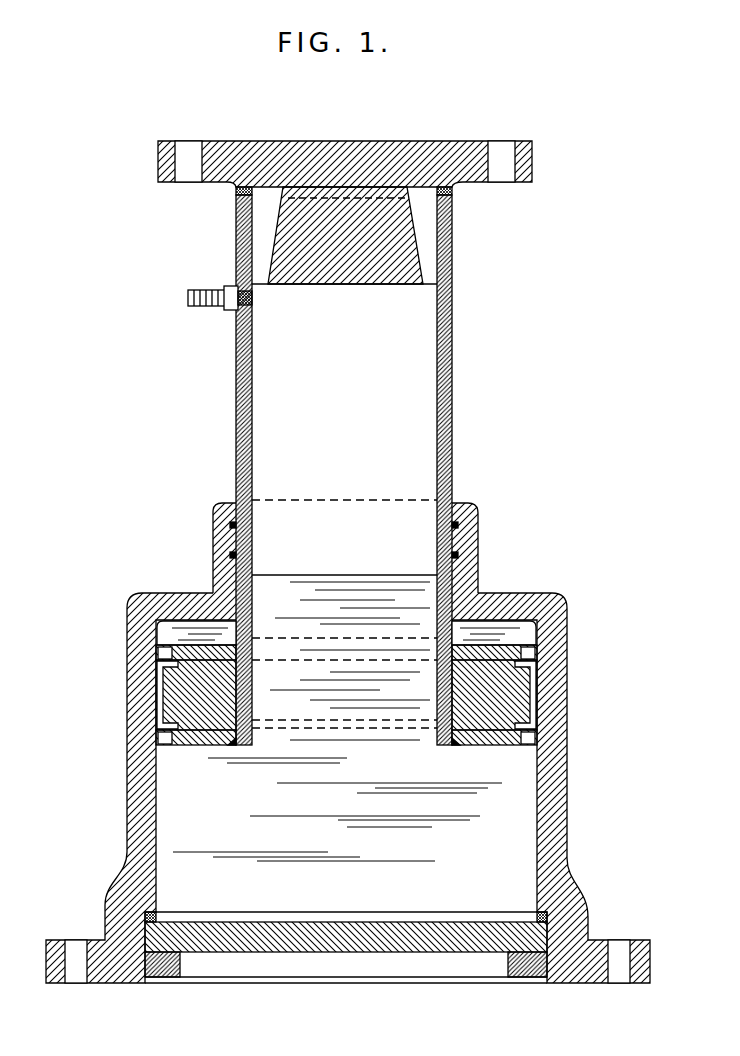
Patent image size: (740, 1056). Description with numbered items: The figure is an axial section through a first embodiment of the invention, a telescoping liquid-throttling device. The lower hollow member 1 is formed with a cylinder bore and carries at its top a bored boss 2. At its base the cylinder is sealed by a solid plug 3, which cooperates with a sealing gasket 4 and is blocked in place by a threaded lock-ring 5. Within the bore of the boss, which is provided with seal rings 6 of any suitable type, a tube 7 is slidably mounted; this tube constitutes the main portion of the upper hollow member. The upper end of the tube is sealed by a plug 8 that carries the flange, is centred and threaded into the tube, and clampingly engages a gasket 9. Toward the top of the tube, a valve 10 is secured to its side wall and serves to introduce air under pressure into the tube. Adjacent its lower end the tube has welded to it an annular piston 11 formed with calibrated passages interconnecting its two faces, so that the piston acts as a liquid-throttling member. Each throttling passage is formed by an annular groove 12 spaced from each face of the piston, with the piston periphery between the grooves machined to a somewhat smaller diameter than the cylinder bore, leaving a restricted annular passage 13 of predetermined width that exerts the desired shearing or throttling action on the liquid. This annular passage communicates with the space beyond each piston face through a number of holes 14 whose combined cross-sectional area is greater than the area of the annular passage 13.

The lower hollow member 1 is at (550, 807).
The bored boss 2 is at (470, 577).
The solid plug 3 is at (452, 920).
The sealing gasket 4 is at (538, 915).
The threaded lock-ring 5 is at (525, 970).
The seal rings 6 is at (476, 543).
The tube 7 is at (452, 447).
The plug 8 is at (380, 150).
The gasket 9 is at (455, 200).
The valve 10 is at (203, 307).
The annular piston 11 is at (473, 747).
The annular groove 12 is at (537, 668).
The restricted annular passage 13 is at (535, 707).
The holes 14 is at (538, 628).